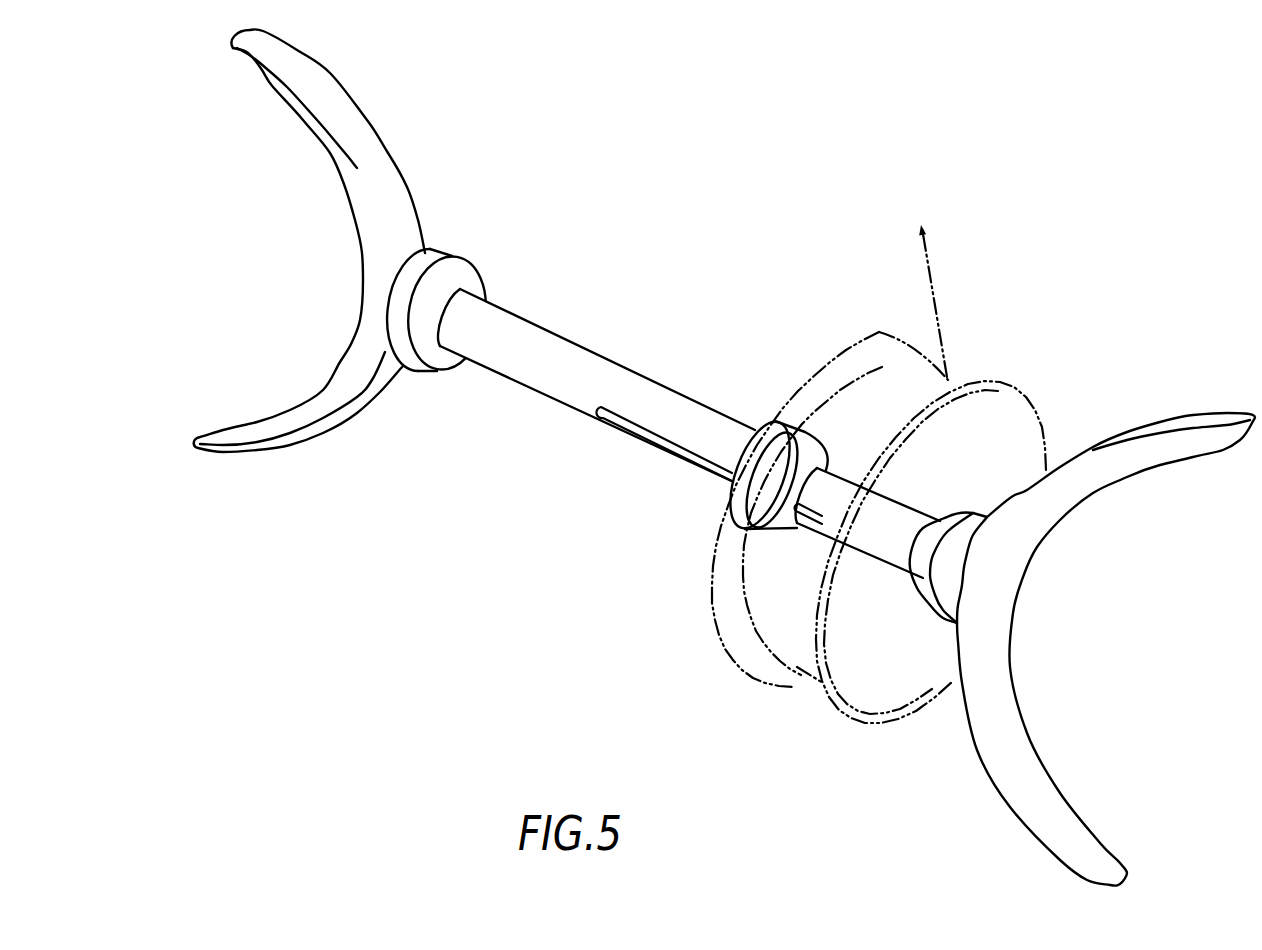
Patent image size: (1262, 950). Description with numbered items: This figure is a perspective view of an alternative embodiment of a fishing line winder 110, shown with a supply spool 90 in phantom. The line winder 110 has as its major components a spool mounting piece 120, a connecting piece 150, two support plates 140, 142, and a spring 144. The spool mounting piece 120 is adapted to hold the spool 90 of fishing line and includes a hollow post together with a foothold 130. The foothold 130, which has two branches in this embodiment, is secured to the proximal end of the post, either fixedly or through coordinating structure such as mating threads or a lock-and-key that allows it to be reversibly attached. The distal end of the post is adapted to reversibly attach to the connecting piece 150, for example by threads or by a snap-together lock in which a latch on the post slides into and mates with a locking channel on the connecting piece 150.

The spool 90 is at (1012, 400).
The fishing line winder 110 is at (718, 286).
The spool mounting piece 120 is at (550, 468).
The foothold 130 is at (351, 436).
The support plate 140 is at (780, 427).
The support plate 142 is at (923, 570).
The spring 144 is at (684, 453).
The connecting piece 150 is at (940, 758).